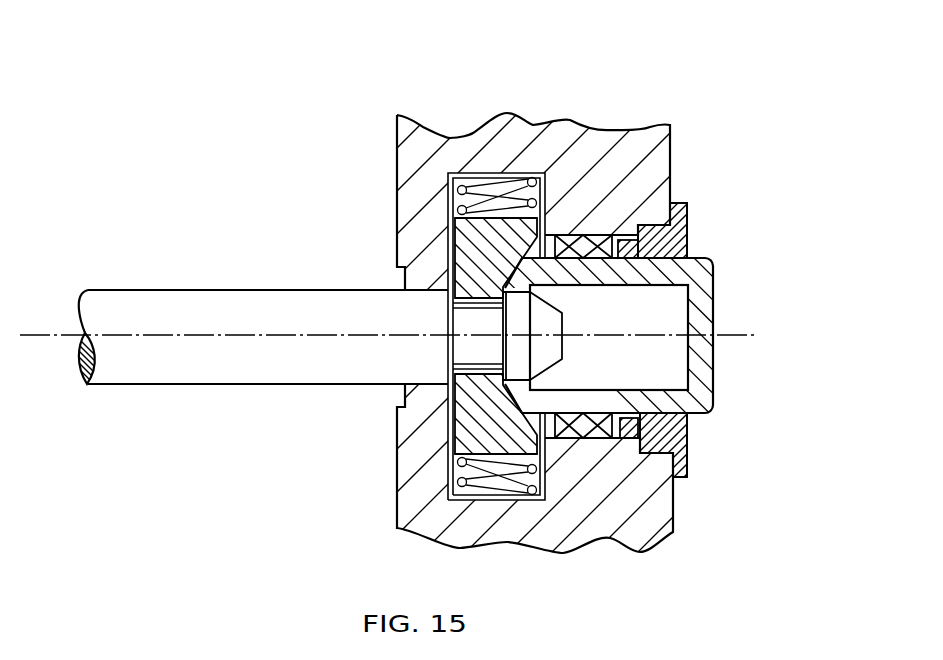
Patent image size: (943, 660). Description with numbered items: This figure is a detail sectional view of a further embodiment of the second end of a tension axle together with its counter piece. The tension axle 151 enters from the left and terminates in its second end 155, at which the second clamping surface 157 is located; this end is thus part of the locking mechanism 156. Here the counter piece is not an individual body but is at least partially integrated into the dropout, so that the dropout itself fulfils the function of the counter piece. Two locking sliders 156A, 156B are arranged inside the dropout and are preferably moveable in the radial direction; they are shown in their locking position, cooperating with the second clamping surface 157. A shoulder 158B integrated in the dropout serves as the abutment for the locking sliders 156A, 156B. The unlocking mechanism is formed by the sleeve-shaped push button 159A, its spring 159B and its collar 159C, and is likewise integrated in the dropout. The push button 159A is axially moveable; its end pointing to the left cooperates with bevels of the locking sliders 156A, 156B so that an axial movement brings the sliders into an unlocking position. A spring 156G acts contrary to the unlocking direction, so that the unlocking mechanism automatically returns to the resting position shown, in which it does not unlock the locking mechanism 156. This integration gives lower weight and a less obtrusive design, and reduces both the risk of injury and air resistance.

The tension axle 151 is at (107, 167).
The second end 155 is at (268, 200).
The locking mechanism 156 is at (463, 170).
The locking slider 156A is at (470, 240).
The locking slider 156B is at (460, 413).
The spring 156G is at (469, 477).
The second clamping surface 157 is at (490, 293).
The shoulder 158B is at (452, 227).
The button 159A is at (699, 277).
The spring 159B is at (581, 246).
The collar 159C is at (683, 440).